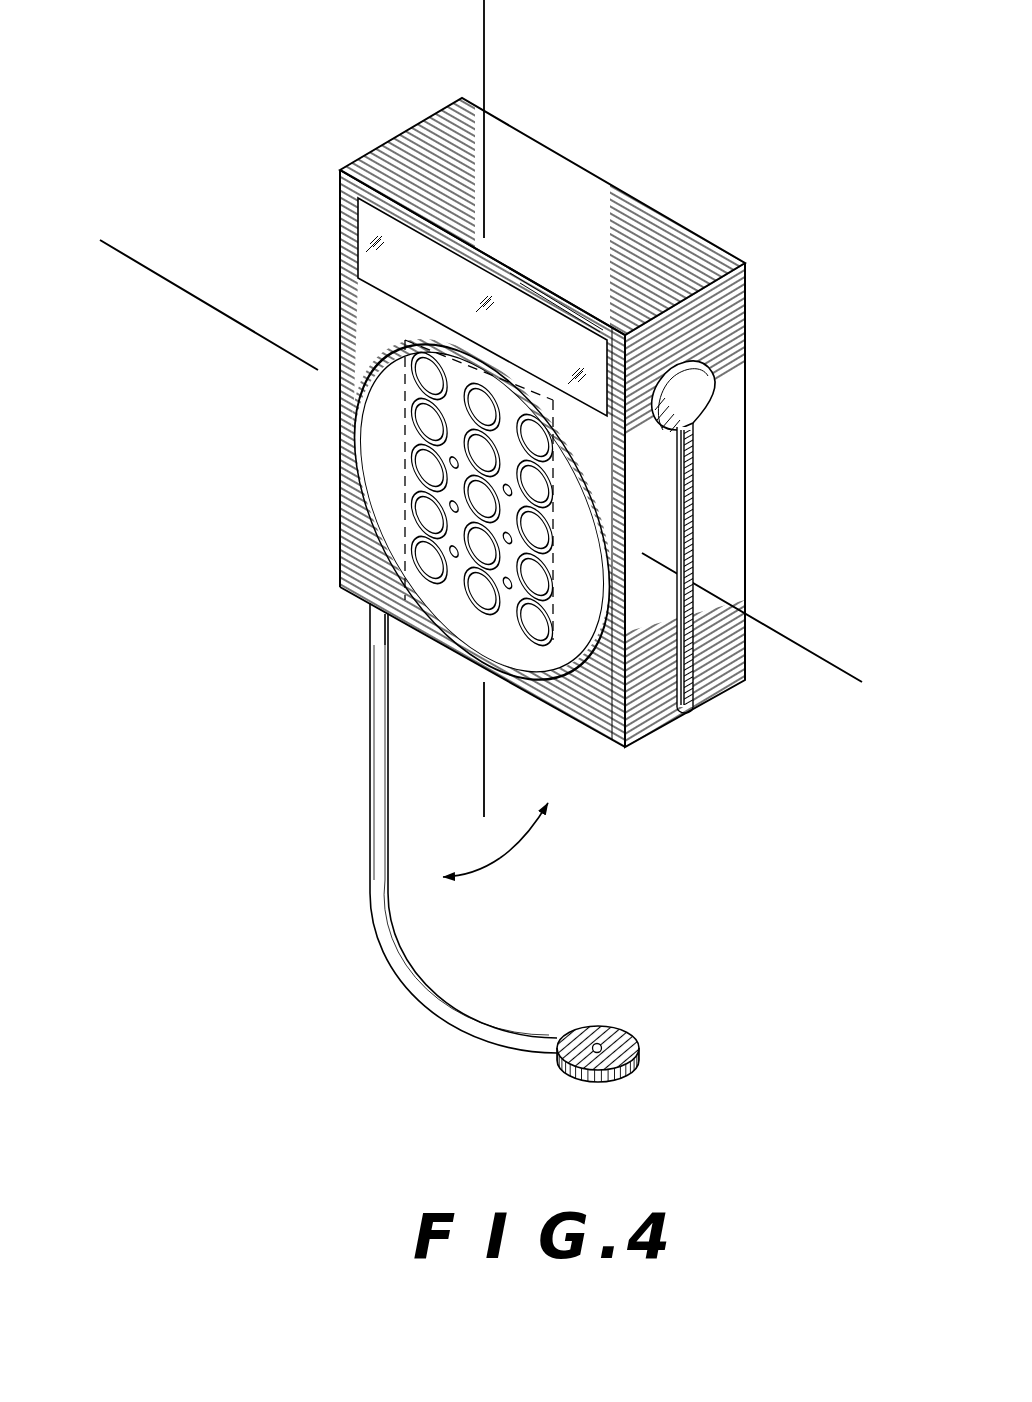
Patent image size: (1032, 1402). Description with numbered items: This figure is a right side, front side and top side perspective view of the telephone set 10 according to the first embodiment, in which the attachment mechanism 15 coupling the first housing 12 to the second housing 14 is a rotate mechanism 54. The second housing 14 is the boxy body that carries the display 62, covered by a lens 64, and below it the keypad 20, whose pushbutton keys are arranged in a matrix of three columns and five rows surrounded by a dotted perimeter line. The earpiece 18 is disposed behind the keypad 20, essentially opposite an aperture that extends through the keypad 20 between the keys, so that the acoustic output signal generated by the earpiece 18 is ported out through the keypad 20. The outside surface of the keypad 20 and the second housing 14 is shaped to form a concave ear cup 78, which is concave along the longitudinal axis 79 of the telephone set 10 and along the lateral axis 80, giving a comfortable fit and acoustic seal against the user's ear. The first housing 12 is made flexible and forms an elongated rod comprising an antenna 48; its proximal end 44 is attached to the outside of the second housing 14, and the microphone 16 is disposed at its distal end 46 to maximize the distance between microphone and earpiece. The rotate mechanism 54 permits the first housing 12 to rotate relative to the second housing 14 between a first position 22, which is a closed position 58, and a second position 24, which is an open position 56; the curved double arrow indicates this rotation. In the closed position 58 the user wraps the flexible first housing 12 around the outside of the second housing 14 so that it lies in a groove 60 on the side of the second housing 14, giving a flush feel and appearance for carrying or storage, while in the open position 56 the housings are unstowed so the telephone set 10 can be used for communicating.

The telephone set 10 is at (800, 1156).
The first housing 12 is at (362, 915).
The second housing 14 is at (742, 487).
The attachment mechanism 15 is at (412, 667).
The microphone 16 is at (598, 1044).
The earpiece 18 is at (567, 571).
The keypad 20 is at (408, 473).
The first position 22 is at (549, 814).
The second position 24 is at (456, 891).
The proximal end 44 is at (370, 606).
The distal end 46 is at (610, 1085).
The antenna 48 is at (372, 803).
The rotate mechanism 54 is at (345, 620).
The open position 56 is at (456, 891).
The closed position 58 is at (549, 814).
The groove 60 is at (690, 556).
The display 62 is at (368, 224).
The lens 64 is at (573, 333).
The concave ear cup 78 is at (563, 643).
The longitudinal axis 79 is at (484, 12).
The lateral axis 80 is at (140, 263).